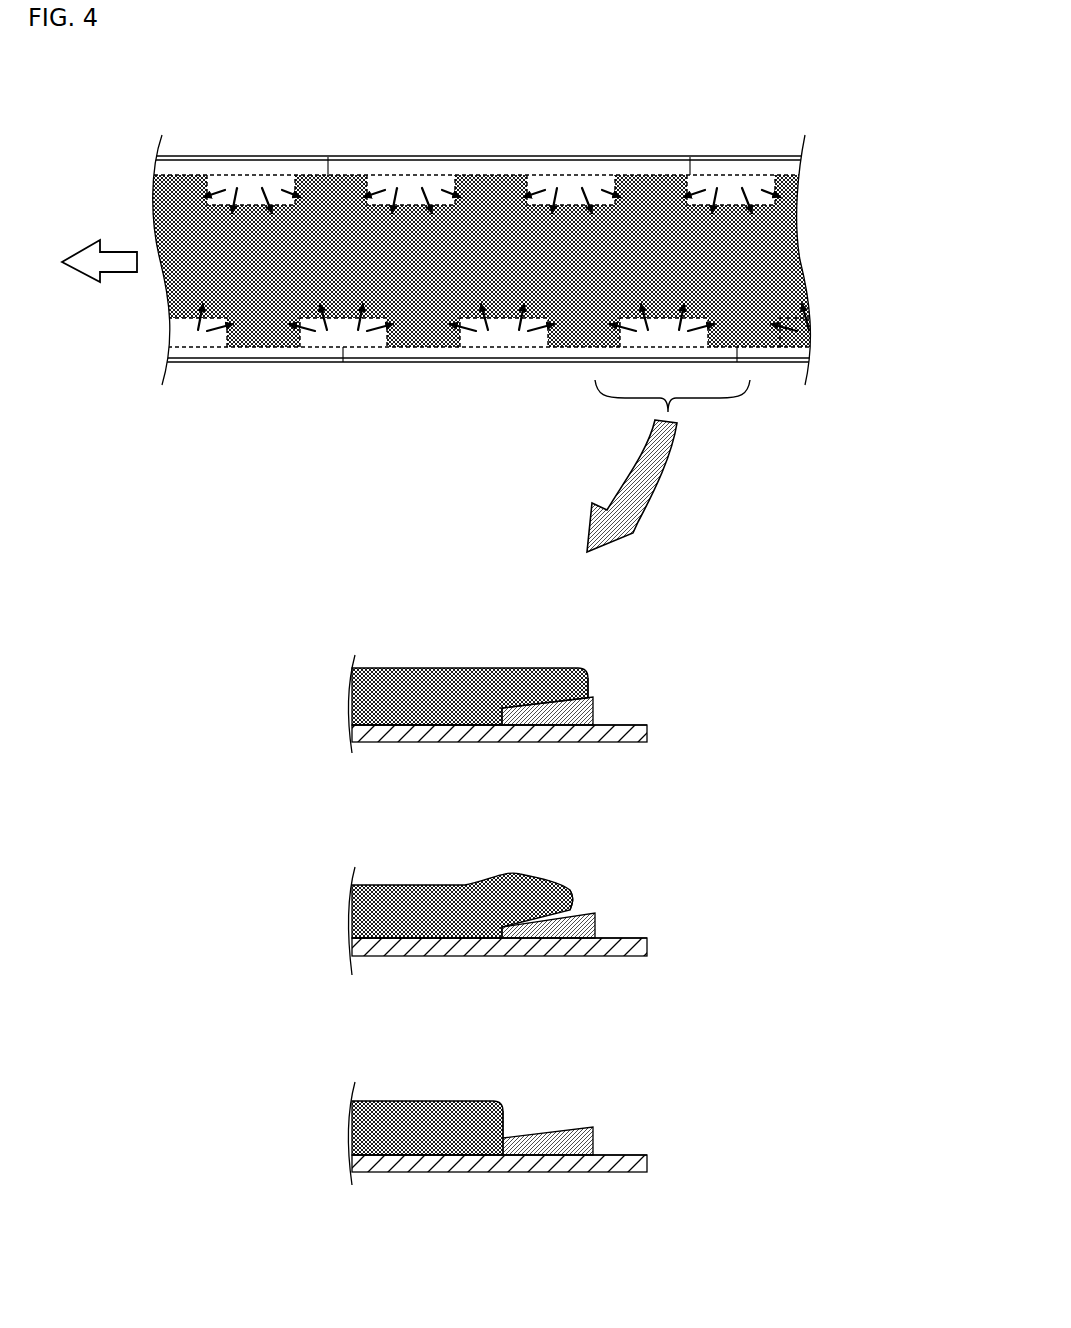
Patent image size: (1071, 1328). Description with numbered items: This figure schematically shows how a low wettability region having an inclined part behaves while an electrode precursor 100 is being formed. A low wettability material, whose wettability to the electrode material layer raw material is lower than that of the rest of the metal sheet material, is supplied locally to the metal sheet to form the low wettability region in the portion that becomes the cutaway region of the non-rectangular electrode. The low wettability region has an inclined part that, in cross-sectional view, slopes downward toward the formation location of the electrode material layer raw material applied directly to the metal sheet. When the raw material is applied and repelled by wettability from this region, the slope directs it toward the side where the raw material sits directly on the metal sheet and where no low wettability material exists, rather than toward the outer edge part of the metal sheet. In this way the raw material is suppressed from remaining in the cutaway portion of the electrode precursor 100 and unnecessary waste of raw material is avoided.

The electrode precursor 100 is at (522, 223).